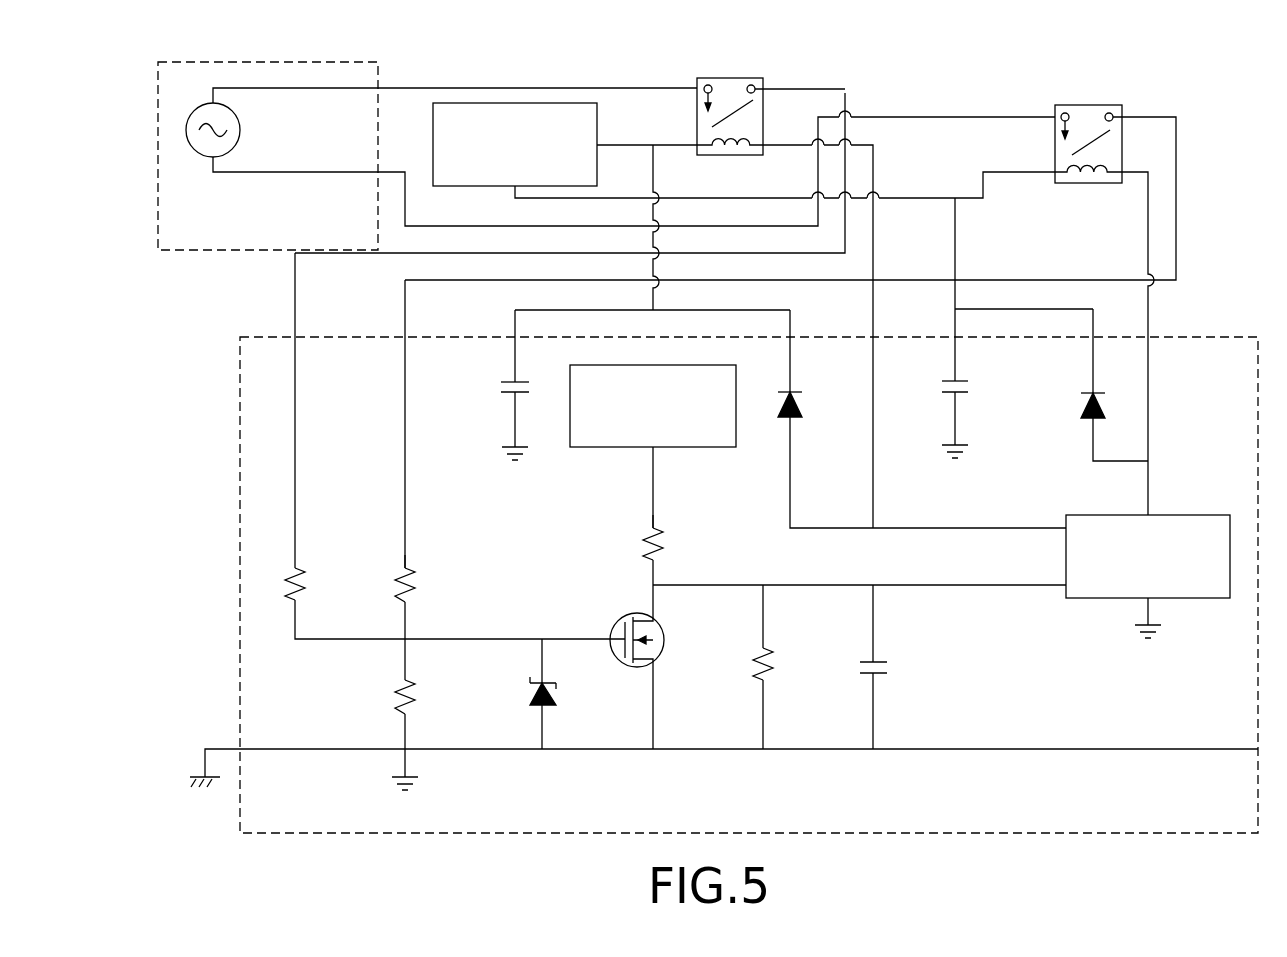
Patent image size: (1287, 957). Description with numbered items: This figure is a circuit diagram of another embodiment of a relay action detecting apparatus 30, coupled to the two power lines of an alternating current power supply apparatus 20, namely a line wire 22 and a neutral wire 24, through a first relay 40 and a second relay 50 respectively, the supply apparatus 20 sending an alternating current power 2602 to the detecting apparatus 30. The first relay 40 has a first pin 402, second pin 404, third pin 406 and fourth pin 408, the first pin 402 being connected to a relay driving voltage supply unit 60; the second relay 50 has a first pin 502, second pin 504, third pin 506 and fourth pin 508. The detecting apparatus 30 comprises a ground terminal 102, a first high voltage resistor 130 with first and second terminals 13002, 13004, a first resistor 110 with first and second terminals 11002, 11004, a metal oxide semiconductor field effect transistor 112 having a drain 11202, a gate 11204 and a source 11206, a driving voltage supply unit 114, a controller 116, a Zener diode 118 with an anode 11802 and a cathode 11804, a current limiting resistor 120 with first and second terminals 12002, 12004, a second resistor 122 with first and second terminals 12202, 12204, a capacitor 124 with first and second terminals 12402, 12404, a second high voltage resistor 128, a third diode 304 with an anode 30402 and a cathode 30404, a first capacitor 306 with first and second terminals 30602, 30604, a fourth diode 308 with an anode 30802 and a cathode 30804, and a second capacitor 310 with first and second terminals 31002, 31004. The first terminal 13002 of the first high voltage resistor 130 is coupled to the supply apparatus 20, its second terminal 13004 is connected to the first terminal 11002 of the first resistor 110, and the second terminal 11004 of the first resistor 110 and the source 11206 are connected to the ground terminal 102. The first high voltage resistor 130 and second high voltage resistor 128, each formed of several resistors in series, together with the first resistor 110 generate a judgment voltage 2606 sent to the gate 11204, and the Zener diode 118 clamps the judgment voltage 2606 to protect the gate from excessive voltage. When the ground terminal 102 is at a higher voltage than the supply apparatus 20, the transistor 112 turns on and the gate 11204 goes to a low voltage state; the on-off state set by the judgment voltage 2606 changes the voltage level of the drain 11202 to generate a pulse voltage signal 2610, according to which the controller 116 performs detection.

The alternating current power supply apparatus 20 is at (158, 143).
The line wire 22 is at (222, 88).
The neutral wire 24 is at (222, 172).
The alternating current power 2602 is at (460, 88).
The judgment voltage 2606 is at (470, 639).
The pulse voltage signal 2610 is at (710, 585).
The relay action detecting apparatus 30 is at (930, 833).
The first relay 40 is at (732, 282).
The first pin 402 is at (697, 145).
The second pin 404 is at (770, 150).
The third pin 406 is at (763, 89).
The fourth pin 408 is at (697, 88).
The second relay 50 is at (819, 316).
The first pin 502 is at (1055, 172).
The second pin 504 is at (1128, 178).
The third pin 506 is at (1122, 117).
The fourth pin 508 is at (1055, 117).
The relay driving voltage supply unit 60 is at (497, 186).
The ground terminal 102 is at (1140, 635).
The first resistor 110 is at (356, 692).
The first terminal 11002 is at (405, 680).
The second terminal 11004 is at (405, 716).
The metal oxide semiconductor field effect transistor 112 is at (620, 667).
The drain 11202 is at (658, 620).
The gate 11204 is at (610, 639).
The source 11206 is at (660, 668).
The driving voltage supply unit 114 is at (670, 447).
The controller 116 is at (1160, 522).
The Zener diode 118 is at (499, 694).
The anode 11802 is at (542, 706).
The cathode 11804 is at (542, 680).
The current limiting resistor 120 is at (596, 553).
The first terminal 12002 is at (653, 528).
The second terminal 12004 is at (653, 562).
The second resistor 122 is at (813, 666).
The first terminal 12202 is at (770, 645).
The second terminal 12204 is at (768, 690).
The capacitor 124 is at (920, 667).
The first terminal 12402 is at (878, 645).
The second terminal 12404 is at (878, 690).
The second high voltage resistor 128 is at (285, 580).
The first high voltage resistor 130 is at (357, 582).
The first terminal 13002 is at (405, 568).
The second terminal 13004 is at (405, 605).
The third diode 304 is at (922, 419).
The anode 30402 is at (795, 420).
The cathode 30404 is at (795, 392).
The first capacitor 306 is at (601, 391).
The first terminal 30602 is at (515, 380).
The second terminal 30604 is at (515, 425).
The fourth diode 308 is at (1069, 385).
The anode 30802 is at (1093, 420).
The cathode 30804 is at (1093, 393).
The second capacitor 310 is at (985, 332).
The first terminal 31002 is at (955, 381).
The second terminal 31004 is at (955, 420).